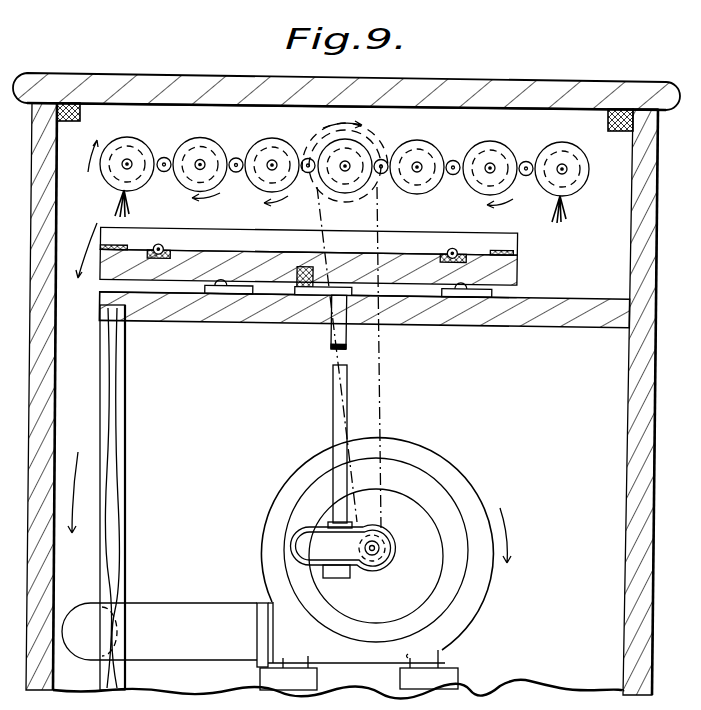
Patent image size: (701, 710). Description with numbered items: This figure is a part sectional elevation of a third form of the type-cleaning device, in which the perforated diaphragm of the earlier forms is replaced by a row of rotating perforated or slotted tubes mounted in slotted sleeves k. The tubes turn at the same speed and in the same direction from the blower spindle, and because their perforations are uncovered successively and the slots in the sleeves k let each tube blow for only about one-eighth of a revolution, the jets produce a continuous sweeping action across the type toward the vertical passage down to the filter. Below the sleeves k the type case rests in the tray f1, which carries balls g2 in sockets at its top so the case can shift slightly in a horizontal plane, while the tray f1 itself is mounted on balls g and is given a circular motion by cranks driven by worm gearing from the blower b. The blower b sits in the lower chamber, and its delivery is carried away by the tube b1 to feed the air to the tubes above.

The slotted sleeves k is at (133, 149).
The balls g2 is at (452, 255).
The balls g is at (219, 287).
The tray f1 is at (497, 273).
The blower b is at (473, 592).
The tube b1 is at (182, 623).